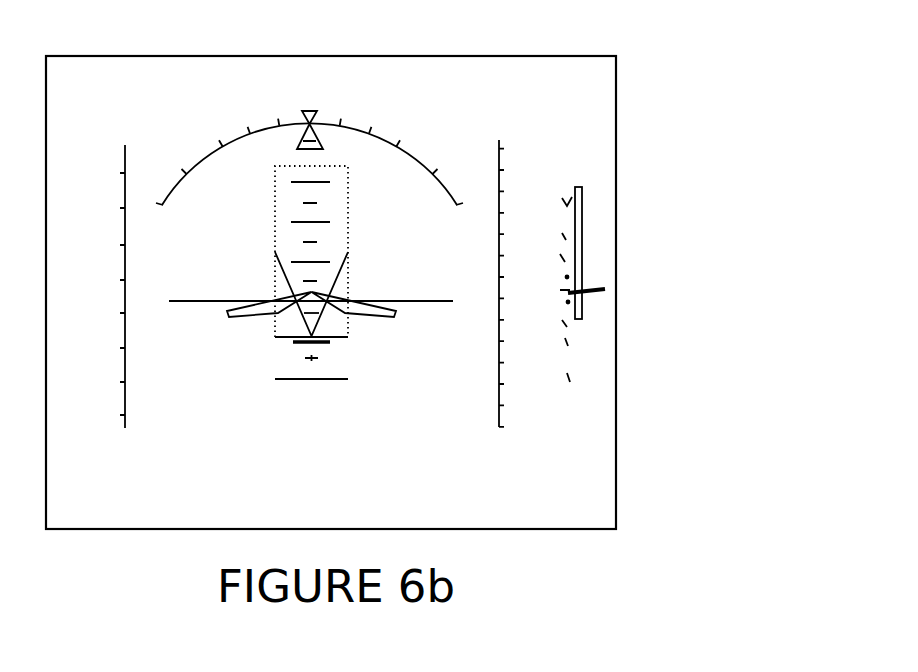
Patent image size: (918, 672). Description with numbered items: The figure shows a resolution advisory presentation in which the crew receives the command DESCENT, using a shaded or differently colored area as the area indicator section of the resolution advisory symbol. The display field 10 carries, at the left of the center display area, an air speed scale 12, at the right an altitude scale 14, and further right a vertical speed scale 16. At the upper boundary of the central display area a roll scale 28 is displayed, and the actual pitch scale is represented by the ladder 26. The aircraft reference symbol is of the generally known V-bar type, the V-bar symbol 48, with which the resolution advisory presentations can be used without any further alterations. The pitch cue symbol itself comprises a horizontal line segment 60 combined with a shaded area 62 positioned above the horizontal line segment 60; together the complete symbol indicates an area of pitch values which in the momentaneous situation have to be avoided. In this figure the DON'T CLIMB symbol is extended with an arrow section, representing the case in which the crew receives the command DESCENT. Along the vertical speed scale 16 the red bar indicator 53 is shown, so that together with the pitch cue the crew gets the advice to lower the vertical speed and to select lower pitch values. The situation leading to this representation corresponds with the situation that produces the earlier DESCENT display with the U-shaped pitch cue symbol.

The head-up display 10 is at (515, 67).
The air speed scale 12 is at (124, 152).
The altitude scale 14 is at (498, 154).
The vertical speed scale 16 is at (583, 187).
The ladder 26 is at (320, 382).
The roll scale 28 is at (383, 141).
The V-bar symbol 48 is at (228, 316).
The red bar indicator 53 is at (580, 254).
The horizontal line segment 60 is at (344, 337).
The shaded area 62 is at (284, 171).